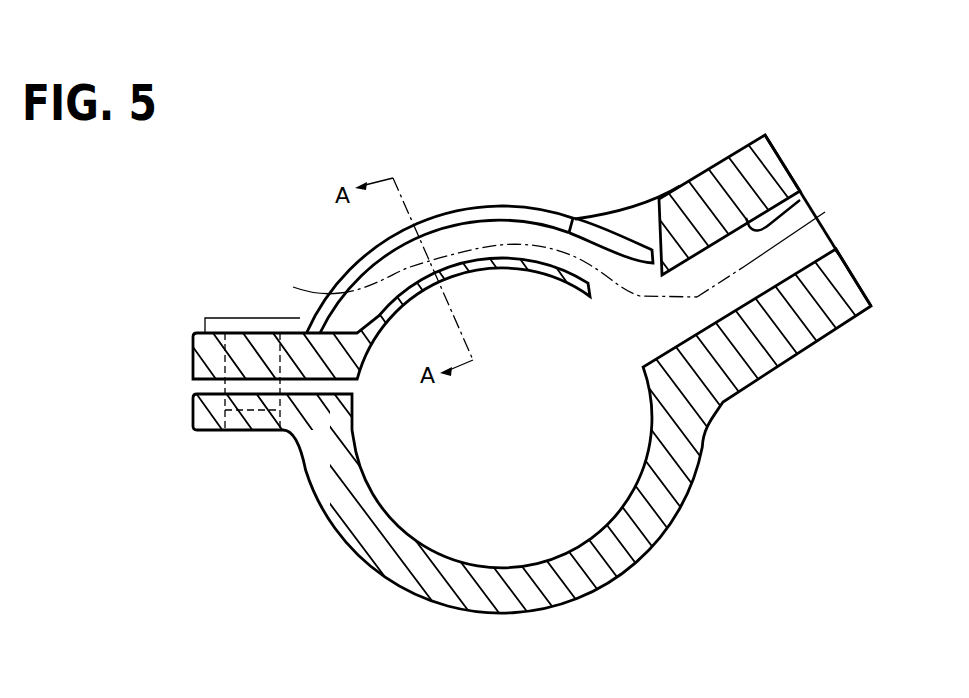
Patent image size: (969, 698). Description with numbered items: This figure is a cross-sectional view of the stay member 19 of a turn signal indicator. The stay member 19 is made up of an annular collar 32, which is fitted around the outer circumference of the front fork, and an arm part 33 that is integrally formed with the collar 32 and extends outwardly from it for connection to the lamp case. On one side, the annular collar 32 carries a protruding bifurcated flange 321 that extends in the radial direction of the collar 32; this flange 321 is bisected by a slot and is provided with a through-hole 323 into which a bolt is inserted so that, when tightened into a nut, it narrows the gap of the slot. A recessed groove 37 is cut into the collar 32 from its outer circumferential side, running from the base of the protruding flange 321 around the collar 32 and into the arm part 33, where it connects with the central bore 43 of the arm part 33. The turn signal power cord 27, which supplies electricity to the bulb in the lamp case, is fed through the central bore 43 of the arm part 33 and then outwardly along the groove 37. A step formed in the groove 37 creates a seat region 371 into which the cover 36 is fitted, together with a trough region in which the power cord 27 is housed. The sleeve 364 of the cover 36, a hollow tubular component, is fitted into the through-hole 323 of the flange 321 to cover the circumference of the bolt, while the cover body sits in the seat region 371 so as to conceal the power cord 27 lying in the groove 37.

The stay member 19 is at (560, 162).
The turn signal power cord 27 is at (697, 296).
The annular collar 32 is at (447, 598).
The protruding bifurcated flange 321 is at (196, 414).
The through-hole 323 is at (280, 415).
The arm part 33 is at (810, 338).
The cover 36 is at (287, 323).
The sleeve 364 is at (235, 386).
The recessed groove 37 is at (482, 240).
The seat region 371 is at (442, 214).
The central bore 43 is at (800, 200).